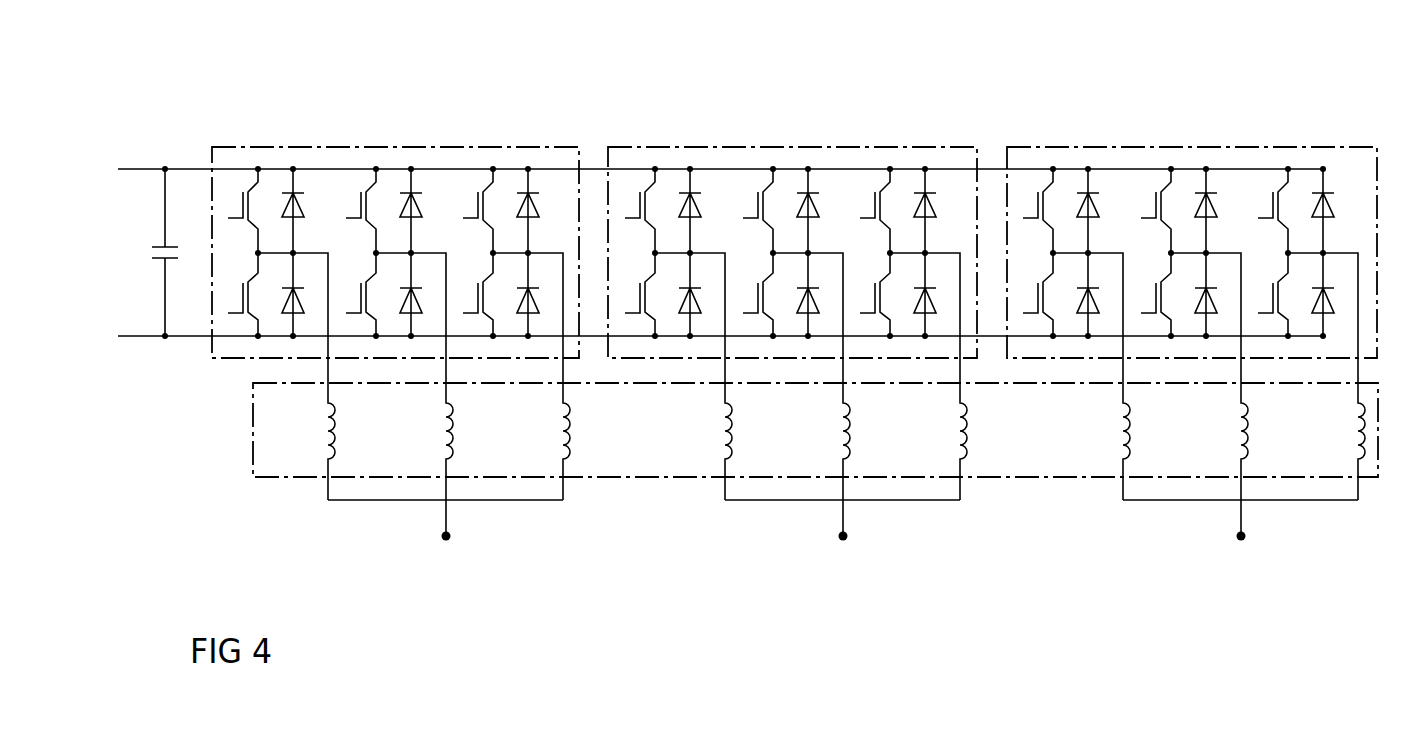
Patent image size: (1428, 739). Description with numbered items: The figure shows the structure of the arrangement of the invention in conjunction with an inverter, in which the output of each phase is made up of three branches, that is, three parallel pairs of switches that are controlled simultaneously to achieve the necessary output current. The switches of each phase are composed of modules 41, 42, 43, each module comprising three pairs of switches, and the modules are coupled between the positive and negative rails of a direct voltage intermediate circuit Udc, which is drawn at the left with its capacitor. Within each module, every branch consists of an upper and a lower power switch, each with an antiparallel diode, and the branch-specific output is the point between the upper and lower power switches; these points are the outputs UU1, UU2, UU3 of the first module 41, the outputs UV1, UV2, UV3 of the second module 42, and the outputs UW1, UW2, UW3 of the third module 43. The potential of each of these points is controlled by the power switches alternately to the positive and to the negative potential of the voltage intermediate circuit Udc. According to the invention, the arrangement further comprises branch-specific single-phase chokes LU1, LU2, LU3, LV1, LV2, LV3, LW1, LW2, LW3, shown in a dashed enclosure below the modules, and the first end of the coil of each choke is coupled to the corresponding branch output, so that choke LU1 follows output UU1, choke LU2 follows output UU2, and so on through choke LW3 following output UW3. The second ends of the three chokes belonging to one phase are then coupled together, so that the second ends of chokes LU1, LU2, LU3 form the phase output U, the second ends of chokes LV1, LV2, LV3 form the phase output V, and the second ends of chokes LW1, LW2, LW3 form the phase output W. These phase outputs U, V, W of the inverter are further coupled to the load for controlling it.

The module 41 is at (443, 203).
The module 42 is at (802, 202).
The module 43 is at (1197, 200).
The direct voltage intermediate circuit Udc is at (132, 252).
The output of power semiconductor components UU1 is at (286, 262).
The output of power semiconductor components UU2 is at (405, 262).
The output of power semiconductor components UU3 is at (522, 262).
The output of power semiconductor components UV1 is at (685, 262).
The output of power semiconductor components UV2 is at (803, 262).
The output of power semiconductor components UV3 is at (920, 262).
The output of power semiconductor components UW1 is at (1086, 262).
The output of power semiconductor components UW2 is at (1204, 262).
The output of power semiconductor components UW3 is at (1323, 262).
The branch-specific single-phase choke LU1 is at (305, 429).
The branch-specific single-phase choke LU2 is at (422, 429).
The branch-specific single-phase choke LU3 is at (539, 429).
The branch-specific single-phase choke LV1 is at (703, 429).
The branch-specific single-phase choke LV2 is at (819, 429).
The branch-specific single-phase choke LV3 is at (936, 429).
The branch-specific single-phase choke LW1 is at (1096, 429).
The branch-specific single-phase choke LW2 is at (1213, 429).
The branch-specific single-phase choke LW3 is at (1330, 429).
The phase output U is at (445, 525).
The phase output V is at (842, 525).
The phase output W is at (1240, 525).